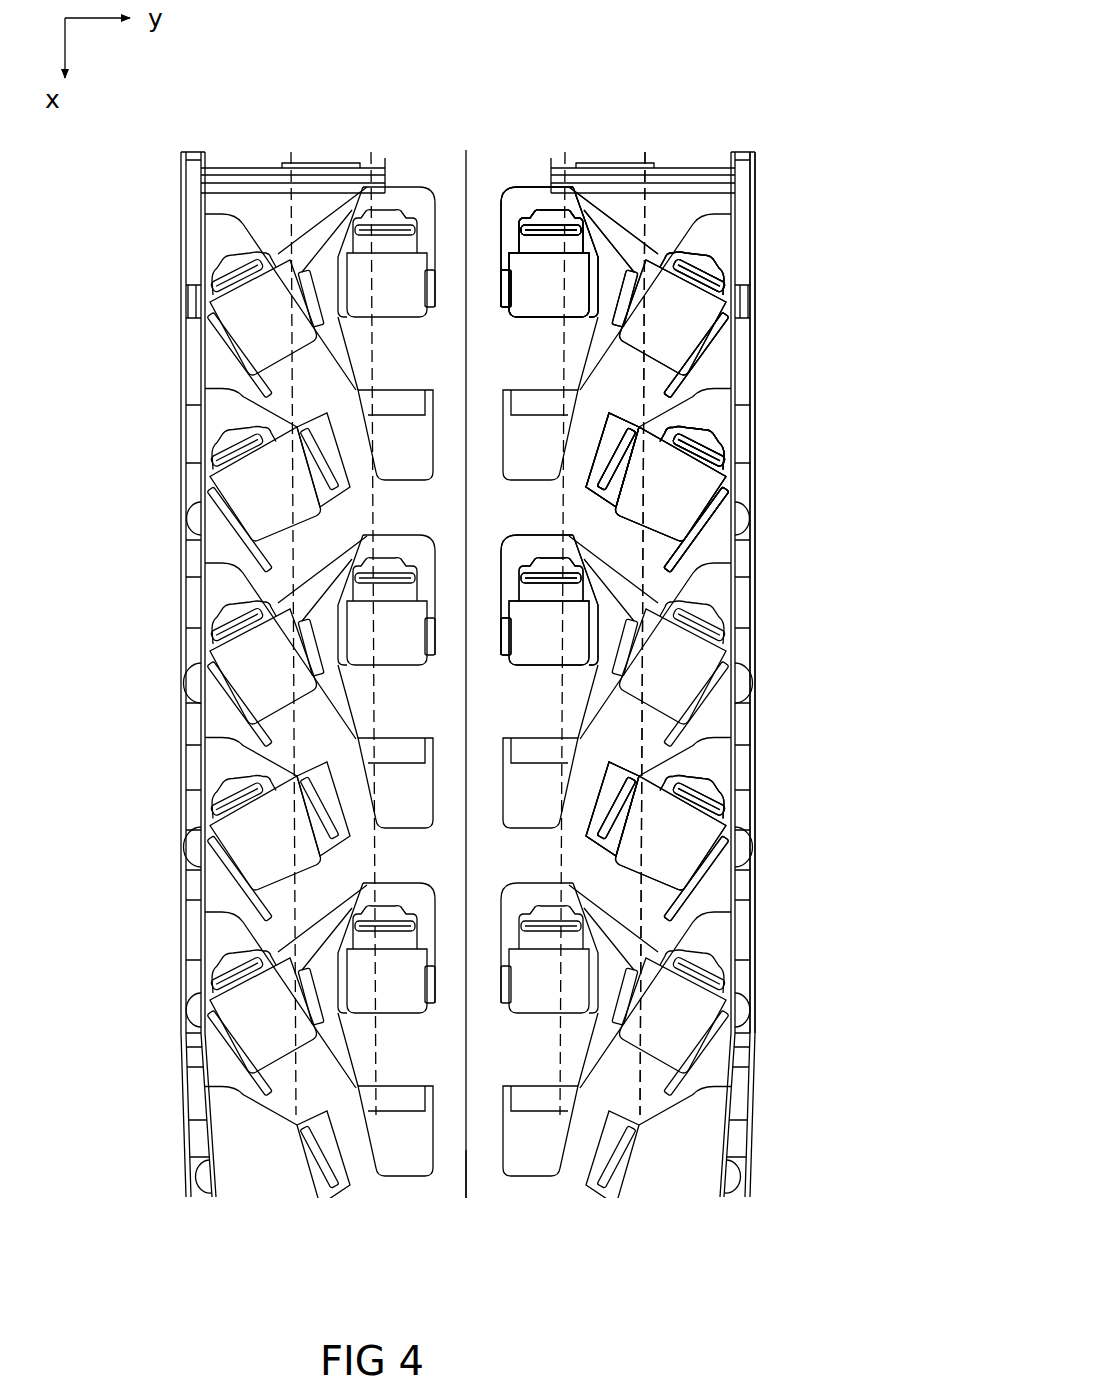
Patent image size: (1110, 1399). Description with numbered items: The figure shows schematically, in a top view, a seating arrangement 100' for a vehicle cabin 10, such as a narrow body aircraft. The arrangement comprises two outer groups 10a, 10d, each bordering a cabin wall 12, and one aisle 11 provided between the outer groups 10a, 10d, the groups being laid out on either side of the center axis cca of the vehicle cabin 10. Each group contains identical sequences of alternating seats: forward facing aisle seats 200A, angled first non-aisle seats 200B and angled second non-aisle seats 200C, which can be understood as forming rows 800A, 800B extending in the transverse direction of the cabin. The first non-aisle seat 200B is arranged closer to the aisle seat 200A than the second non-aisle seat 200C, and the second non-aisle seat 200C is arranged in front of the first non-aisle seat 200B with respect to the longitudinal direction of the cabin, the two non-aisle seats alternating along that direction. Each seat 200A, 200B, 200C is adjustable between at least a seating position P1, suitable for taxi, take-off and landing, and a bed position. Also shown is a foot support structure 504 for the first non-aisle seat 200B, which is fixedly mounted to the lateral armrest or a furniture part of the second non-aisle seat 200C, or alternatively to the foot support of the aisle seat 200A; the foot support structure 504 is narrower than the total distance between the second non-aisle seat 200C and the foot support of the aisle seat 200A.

The outer group 10a is at (287, 112).
The vehicle cabin 10 is at (531, 115).
The outer group 10d is at (643, 108).
The seating arrangement 100' is at (790, 520).
The cabin wall 12 is at (165, 318).
The center axis cca is at (466, 150).
The aisle 11 is at (471, 1200).
The aisle seat 200A is at (568, 238).
The first non-aisle seat 200B is at (710, 296).
The second non-aisle seat 200C is at (710, 435).
The seating position P1 is at (575, 247).
The foot support structure 504 is at (617, 432).
The row 800A is at (787, 490).
The row 800B is at (793, 244).